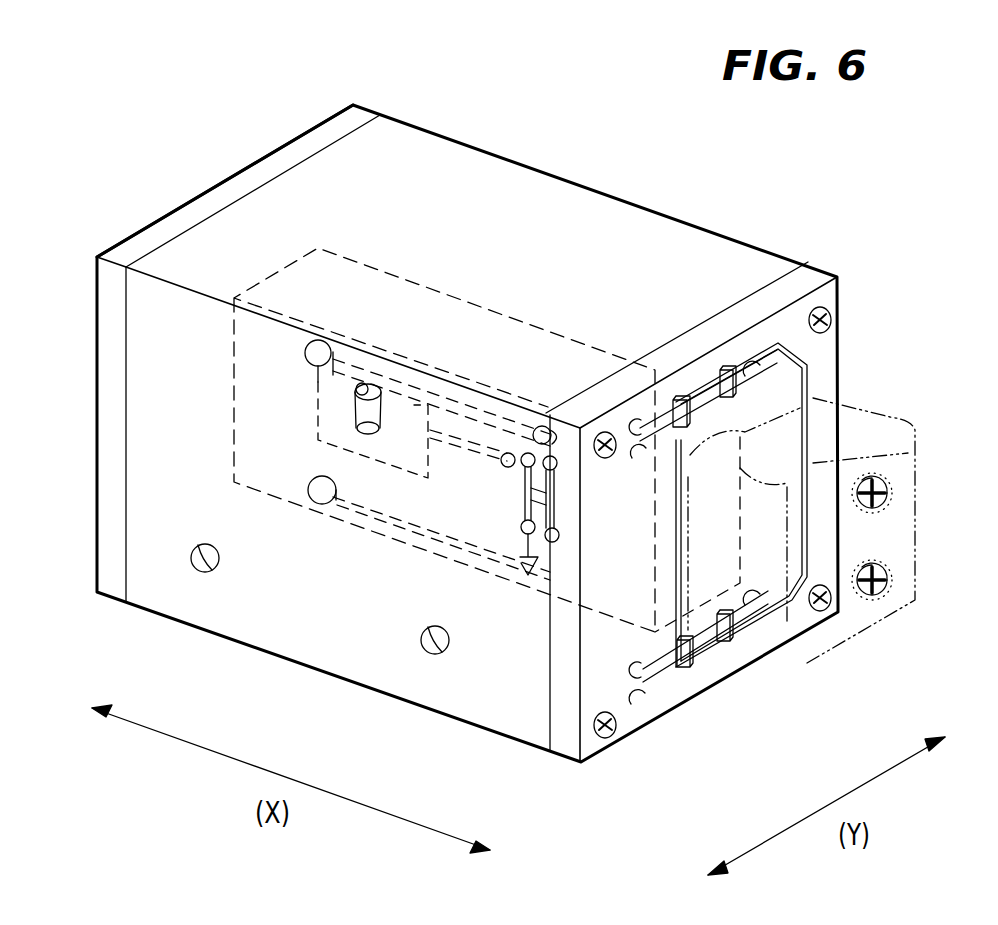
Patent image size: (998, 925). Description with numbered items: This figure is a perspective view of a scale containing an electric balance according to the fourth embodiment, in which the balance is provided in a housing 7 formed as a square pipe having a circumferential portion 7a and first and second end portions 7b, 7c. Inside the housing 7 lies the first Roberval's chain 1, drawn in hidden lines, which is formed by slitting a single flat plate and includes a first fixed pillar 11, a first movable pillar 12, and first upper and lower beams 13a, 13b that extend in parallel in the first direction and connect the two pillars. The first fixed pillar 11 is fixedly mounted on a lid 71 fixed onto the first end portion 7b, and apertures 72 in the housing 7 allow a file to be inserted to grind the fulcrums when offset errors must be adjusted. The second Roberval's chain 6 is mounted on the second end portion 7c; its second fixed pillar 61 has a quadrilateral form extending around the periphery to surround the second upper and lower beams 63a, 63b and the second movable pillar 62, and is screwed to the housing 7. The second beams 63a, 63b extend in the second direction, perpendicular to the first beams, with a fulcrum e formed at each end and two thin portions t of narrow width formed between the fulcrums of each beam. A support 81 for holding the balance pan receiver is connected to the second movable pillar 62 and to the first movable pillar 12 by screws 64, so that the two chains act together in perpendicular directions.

The first Roberval's chain 1 is at (363, 544).
The second Roberval's chain 6 is at (853, 375).
The housing 7 is at (509, 160).
The circumferential portion 7a is at (578, 204).
The first end portion 7b is at (242, 197).
The second end portion 7c is at (773, 285).
The first fixed pillar 11 is at (262, 472).
The first movable pillar 12 is at (655, 520).
The first upper beam 13a is at (467, 318).
The first lower beam 13b is at (403, 548).
The second fixed pillar 61 is at (612, 575).
The second movable pillar 62 is at (740, 438).
The second upper beam 63a is at (702, 402).
The second lower beam 63b is at (708, 650).
The screws 64 is at (893, 493).
The lid 71 is at (323, 122).
The apertures 72 is at (198, 573).
The support 81 is at (908, 453).
The thin portions t is at (722, 377).
The fulcrum e is at (772, 357).